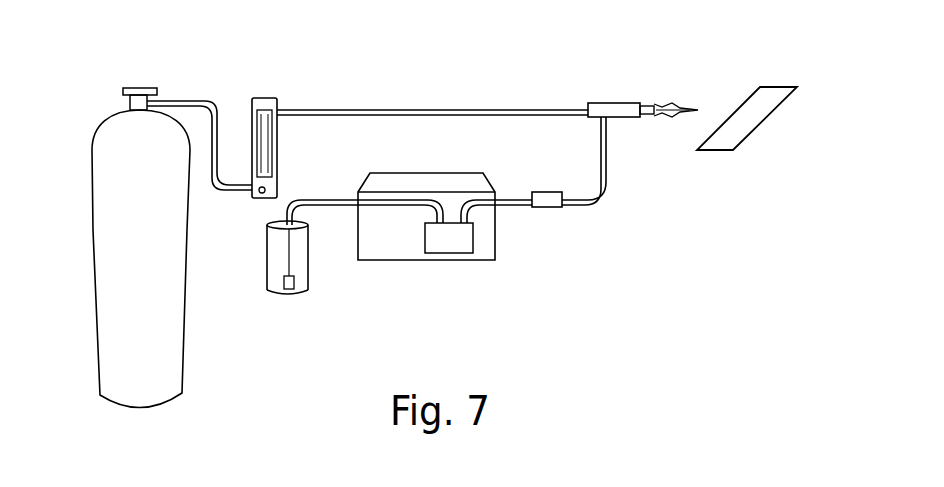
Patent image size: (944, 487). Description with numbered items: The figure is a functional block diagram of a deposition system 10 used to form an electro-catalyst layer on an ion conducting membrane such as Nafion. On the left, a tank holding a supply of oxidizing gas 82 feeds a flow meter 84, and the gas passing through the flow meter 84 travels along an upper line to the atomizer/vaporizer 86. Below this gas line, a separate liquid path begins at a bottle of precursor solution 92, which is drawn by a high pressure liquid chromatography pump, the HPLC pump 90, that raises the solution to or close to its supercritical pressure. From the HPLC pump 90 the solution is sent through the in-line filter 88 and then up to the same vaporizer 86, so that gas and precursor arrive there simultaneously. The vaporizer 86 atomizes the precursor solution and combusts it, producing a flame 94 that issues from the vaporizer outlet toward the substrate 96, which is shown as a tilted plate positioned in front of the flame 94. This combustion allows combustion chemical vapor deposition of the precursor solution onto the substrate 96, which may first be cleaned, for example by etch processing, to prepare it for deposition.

The flame deposition system 10 is at (465, 66).
The supply of oxidizing gas 82 is at (100, 128).
The flow meter 84 is at (273, 78).
The atomizer/vaporizer 86 is at (600, 103).
The in-line filter 88 is at (568, 227).
The HPLC pump 90 is at (440, 150).
The precursor solution supply 92 is at (328, 307).
The flame 94 is at (688, 85).
The substrate 96 is at (763, 160).